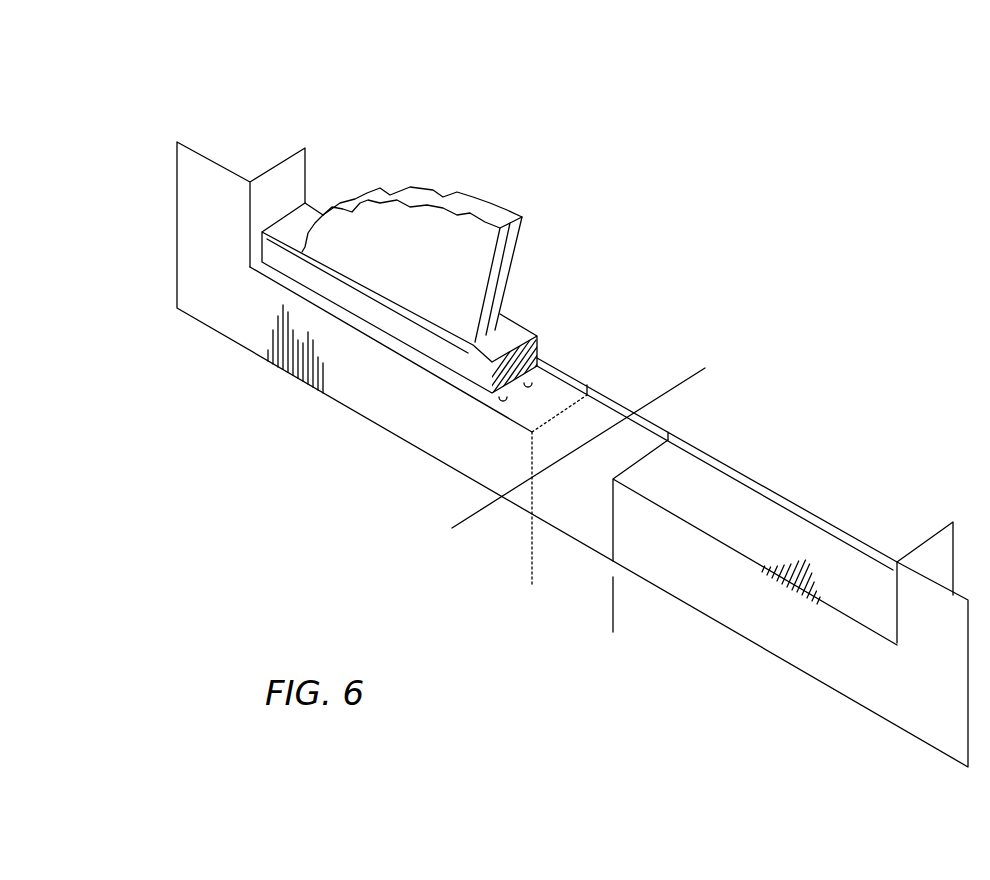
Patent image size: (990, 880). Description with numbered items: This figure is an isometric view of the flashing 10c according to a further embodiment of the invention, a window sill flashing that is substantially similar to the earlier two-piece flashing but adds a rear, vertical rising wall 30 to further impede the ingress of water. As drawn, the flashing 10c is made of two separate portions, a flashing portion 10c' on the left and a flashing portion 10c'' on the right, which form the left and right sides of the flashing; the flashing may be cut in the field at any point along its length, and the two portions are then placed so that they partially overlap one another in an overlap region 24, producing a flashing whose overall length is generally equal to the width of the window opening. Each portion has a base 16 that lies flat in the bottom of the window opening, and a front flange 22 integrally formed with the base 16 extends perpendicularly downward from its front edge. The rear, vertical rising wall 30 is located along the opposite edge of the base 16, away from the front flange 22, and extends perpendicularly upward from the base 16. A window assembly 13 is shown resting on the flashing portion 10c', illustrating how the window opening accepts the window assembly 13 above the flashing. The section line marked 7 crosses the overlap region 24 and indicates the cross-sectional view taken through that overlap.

The flashing 10c is at (572, 454).
The flashing portion 10c' is at (450, 302).
The flashing portion 10c'' is at (755, 535).
The window assembly 13 is at (435, 183).
The rear vertical rising wall 30 is at (715, 457).
The base 16 is at (732, 522).
The front flange 22 is at (689, 572).
The overlap region 24 is at (610, 608).
The section line 7- 7 is at (460, 522).